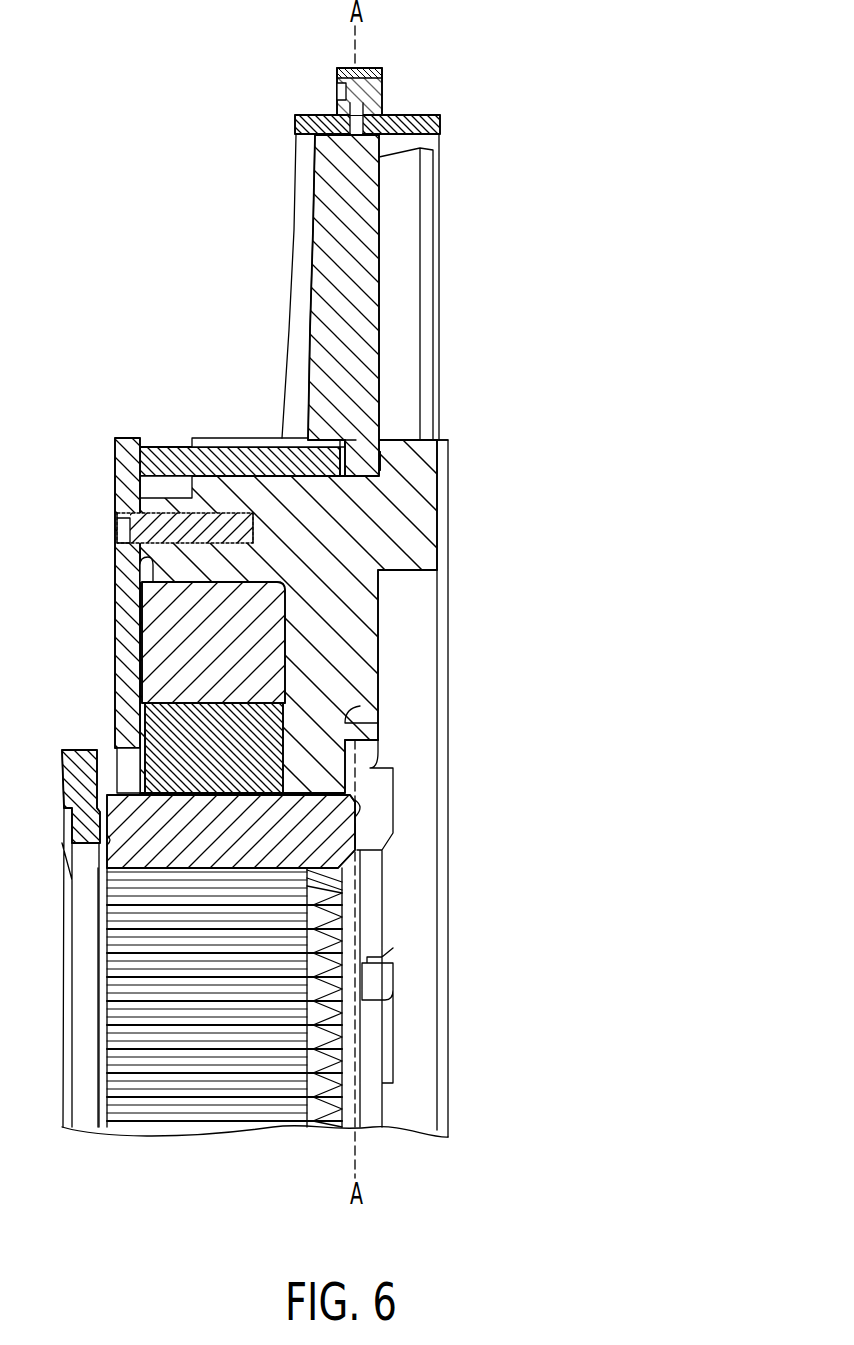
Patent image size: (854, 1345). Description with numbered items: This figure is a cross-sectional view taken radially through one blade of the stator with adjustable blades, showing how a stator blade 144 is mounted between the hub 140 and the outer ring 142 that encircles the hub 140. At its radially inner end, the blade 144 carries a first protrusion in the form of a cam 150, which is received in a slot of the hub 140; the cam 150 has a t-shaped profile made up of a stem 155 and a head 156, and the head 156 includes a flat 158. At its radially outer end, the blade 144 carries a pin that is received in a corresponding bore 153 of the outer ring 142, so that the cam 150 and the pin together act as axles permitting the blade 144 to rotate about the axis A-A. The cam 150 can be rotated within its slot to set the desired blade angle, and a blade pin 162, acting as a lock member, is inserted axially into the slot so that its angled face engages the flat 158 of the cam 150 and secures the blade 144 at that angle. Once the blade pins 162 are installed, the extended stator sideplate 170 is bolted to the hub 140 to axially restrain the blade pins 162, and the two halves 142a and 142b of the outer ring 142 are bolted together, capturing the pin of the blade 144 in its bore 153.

The hub 140 is at (452, 529).
The outer ring 142 is at (465, 116).
The first half of the outer ring 142a is at (287, 123).
The second half of the outer ring 142b is at (410, 110).
The stator blade 144 is at (465, 220).
The cam 150 is at (393, 467).
The bore 153 is at (332, 108).
The stem 155 is at (342, 432).
The head 156 is at (395, 433).
The flat 158 is at (325, 449).
The blade pin 162 is at (176, 433).
The extended stator sideplate 170 is at (90, 607).